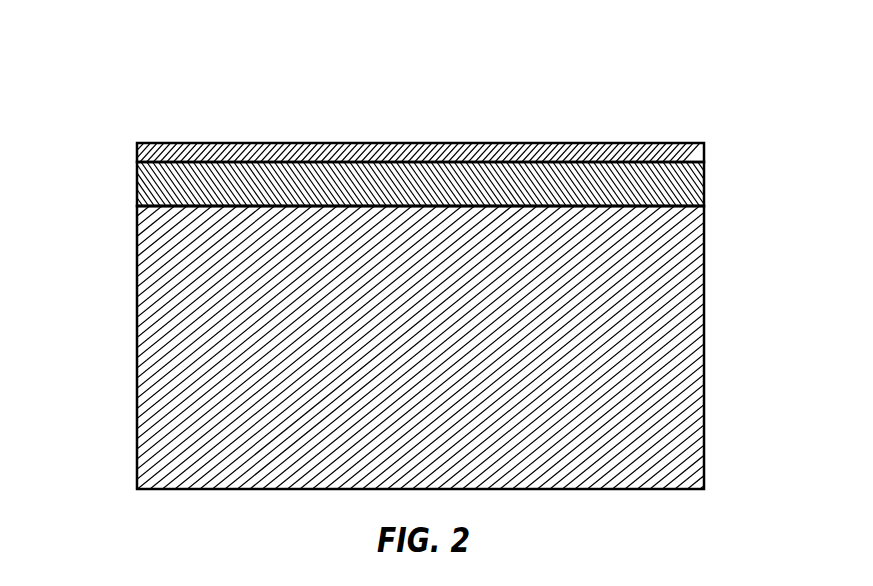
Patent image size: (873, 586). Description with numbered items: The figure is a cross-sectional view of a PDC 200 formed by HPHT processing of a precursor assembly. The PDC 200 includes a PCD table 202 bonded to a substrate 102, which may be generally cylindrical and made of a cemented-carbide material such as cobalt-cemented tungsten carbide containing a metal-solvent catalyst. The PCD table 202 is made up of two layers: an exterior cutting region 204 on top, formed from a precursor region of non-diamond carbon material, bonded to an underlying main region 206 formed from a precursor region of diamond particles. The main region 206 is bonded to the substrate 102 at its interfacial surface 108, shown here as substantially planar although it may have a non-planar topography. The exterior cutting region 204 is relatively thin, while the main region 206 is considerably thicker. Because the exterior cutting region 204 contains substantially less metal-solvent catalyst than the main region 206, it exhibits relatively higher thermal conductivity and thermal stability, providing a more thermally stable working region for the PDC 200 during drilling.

The PDC 200 is at (699, 90).
The substrate 102 is at (705, 334).
The interfacial surface 108 is at (659, 206).
The PCD table 202 is at (718, 142).
The exterior cutting region 204 is at (137, 155).
The main region 206 is at (137, 189).